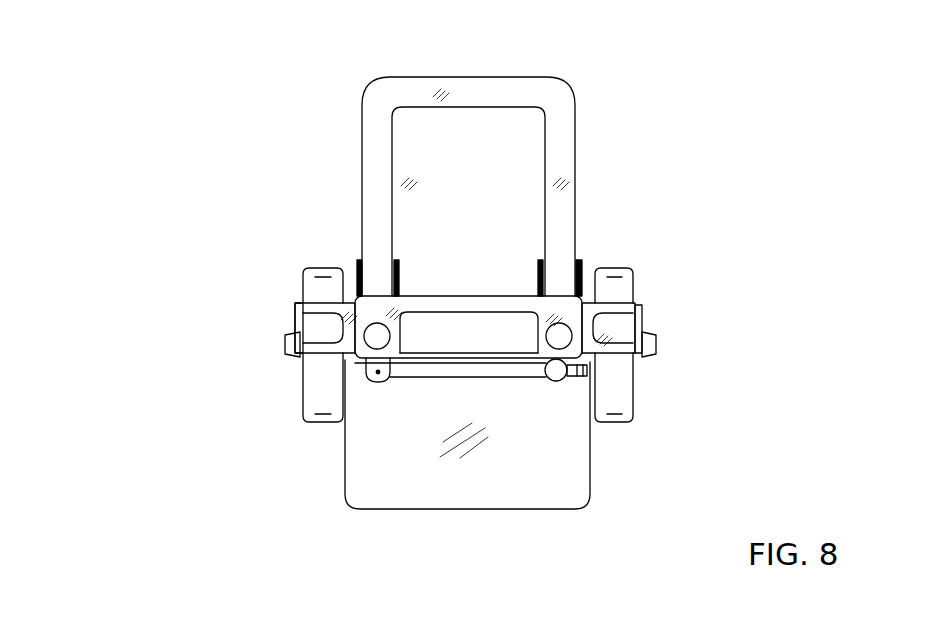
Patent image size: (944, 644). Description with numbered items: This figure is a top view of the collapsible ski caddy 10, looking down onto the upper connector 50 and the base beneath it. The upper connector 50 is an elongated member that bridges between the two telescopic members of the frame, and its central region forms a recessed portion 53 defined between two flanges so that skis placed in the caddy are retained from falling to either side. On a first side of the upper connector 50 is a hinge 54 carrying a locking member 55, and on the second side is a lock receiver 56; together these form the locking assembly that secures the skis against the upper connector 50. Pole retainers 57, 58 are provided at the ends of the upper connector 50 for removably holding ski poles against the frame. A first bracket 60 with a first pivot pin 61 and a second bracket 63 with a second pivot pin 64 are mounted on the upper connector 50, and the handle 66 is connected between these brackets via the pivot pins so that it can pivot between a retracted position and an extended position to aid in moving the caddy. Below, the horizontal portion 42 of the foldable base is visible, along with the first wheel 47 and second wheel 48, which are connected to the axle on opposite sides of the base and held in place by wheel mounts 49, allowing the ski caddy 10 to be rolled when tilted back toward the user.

The collapsible ski caddy 10 is at (137, 130).
The horizontal portion 42 is at (480, 488).
The first wheel 47 is at (303, 400).
The second wheel 48 is at (634, 403).
The wheel mounts 49 is at (282, 343).
The upper connector 50 is at (432, 296).
The recessed portion 53 is at (468, 335).
The hinge 54 is at (377, 380).
The locking member 55 is at (445, 375).
The lock receiver 56 is at (550, 380).
The pole retainer 57 is at (296, 320).
The pole retainer 58 is at (645, 320).
The first bracket 60 is at (358, 290).
The first pivot pin 61 is at (356, 292).
The second bracket 63 is at (582, 268).
The second pivot pin 64 is at (582, 293).
The handle 66 is at (575, 140).